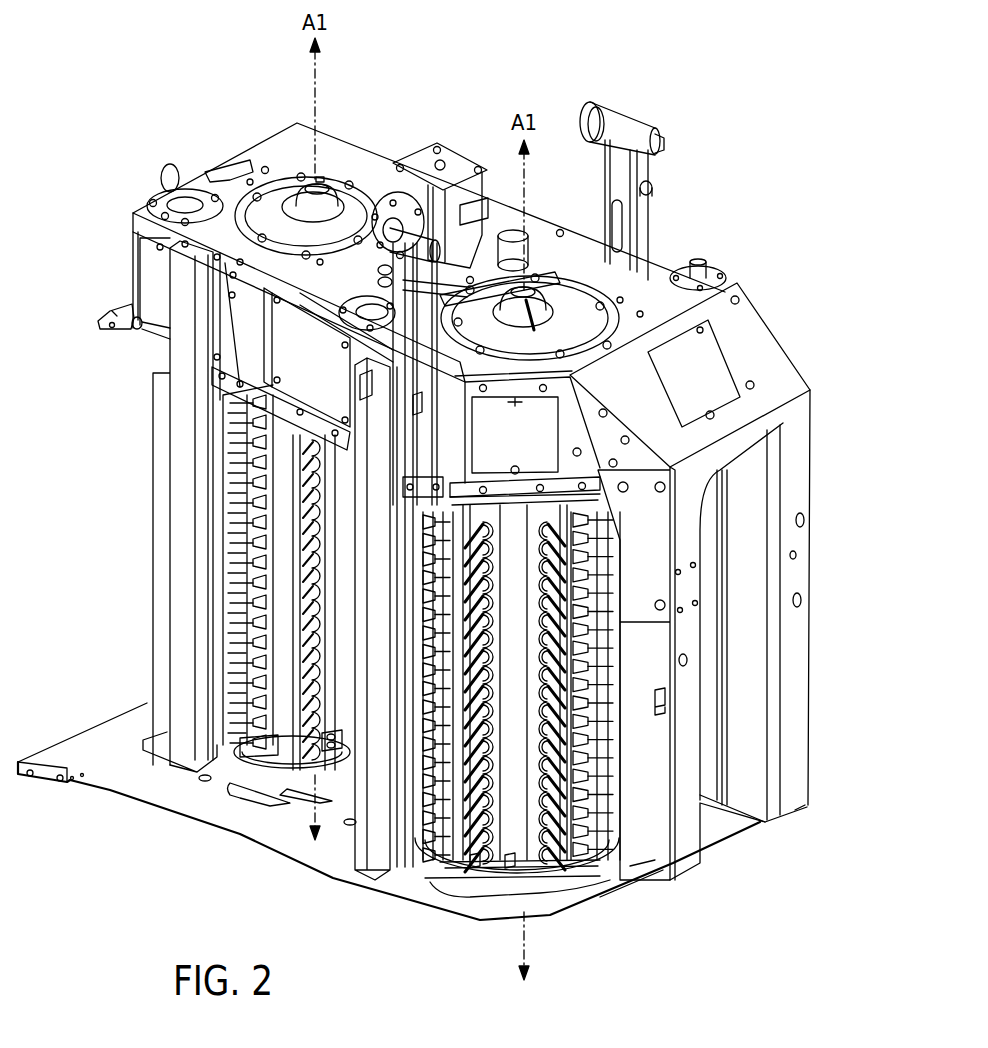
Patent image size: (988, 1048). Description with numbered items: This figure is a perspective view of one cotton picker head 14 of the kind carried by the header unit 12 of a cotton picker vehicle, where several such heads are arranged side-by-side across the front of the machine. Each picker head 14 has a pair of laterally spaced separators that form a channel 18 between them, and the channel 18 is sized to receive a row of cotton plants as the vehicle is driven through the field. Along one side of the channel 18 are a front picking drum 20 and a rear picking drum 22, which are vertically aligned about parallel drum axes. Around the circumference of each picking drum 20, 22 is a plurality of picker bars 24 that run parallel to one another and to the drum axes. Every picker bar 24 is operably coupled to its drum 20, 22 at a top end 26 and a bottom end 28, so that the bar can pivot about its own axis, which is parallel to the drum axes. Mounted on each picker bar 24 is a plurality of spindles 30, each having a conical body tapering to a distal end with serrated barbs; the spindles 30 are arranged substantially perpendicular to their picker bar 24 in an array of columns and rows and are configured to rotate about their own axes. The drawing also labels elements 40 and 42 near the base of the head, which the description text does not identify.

The header unit 12 is at (151, 119).
The picker head 14 is at (533, 898).
The channel 18 is at (721, 842).
The front picking drum 20 is at (567, 296).
The rear picking drum 22 is at (355, 198).
The picker bar 24 is at (460, 840).
The top end 26 is at (555, 492).
The bottom end 28 is at (482, 862).
The spindle 30 is at (230, 572).
The pedestal ring 40 is at (293, 770).
The pin column bracket 42 is at (263, 748).